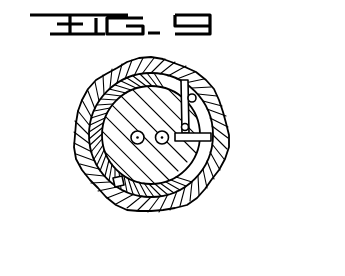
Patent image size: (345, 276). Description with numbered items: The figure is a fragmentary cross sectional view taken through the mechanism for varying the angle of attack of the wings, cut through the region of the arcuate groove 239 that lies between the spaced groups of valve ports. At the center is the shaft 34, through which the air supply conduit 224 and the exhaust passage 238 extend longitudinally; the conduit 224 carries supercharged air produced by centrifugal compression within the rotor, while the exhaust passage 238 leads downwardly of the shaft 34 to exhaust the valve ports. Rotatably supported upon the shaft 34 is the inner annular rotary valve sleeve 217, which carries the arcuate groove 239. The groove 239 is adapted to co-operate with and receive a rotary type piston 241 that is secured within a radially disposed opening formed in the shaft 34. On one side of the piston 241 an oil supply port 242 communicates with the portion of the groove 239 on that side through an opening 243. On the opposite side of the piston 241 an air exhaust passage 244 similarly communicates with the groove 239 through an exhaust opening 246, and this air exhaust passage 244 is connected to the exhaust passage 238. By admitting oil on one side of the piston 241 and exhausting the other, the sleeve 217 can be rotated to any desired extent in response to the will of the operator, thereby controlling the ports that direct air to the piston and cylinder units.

The shaft 34 is at (118, 153).
The inner annular rotary valve sleeve 217 is at (122, 185).
The air supply conduit 224 is at (133, 132).
The exhaust passage 238 is at (122, 78).
The arcuate groove 239 is at (187, 94).
The rotary type piston 241 is at (195, 138).
The oil supply port 242 is at (190, 74).
The opening 243 is at (188, 127).
The air exhaust passage 244 is at (197, 187).
The exhaust opening 246 is at (219, 160).